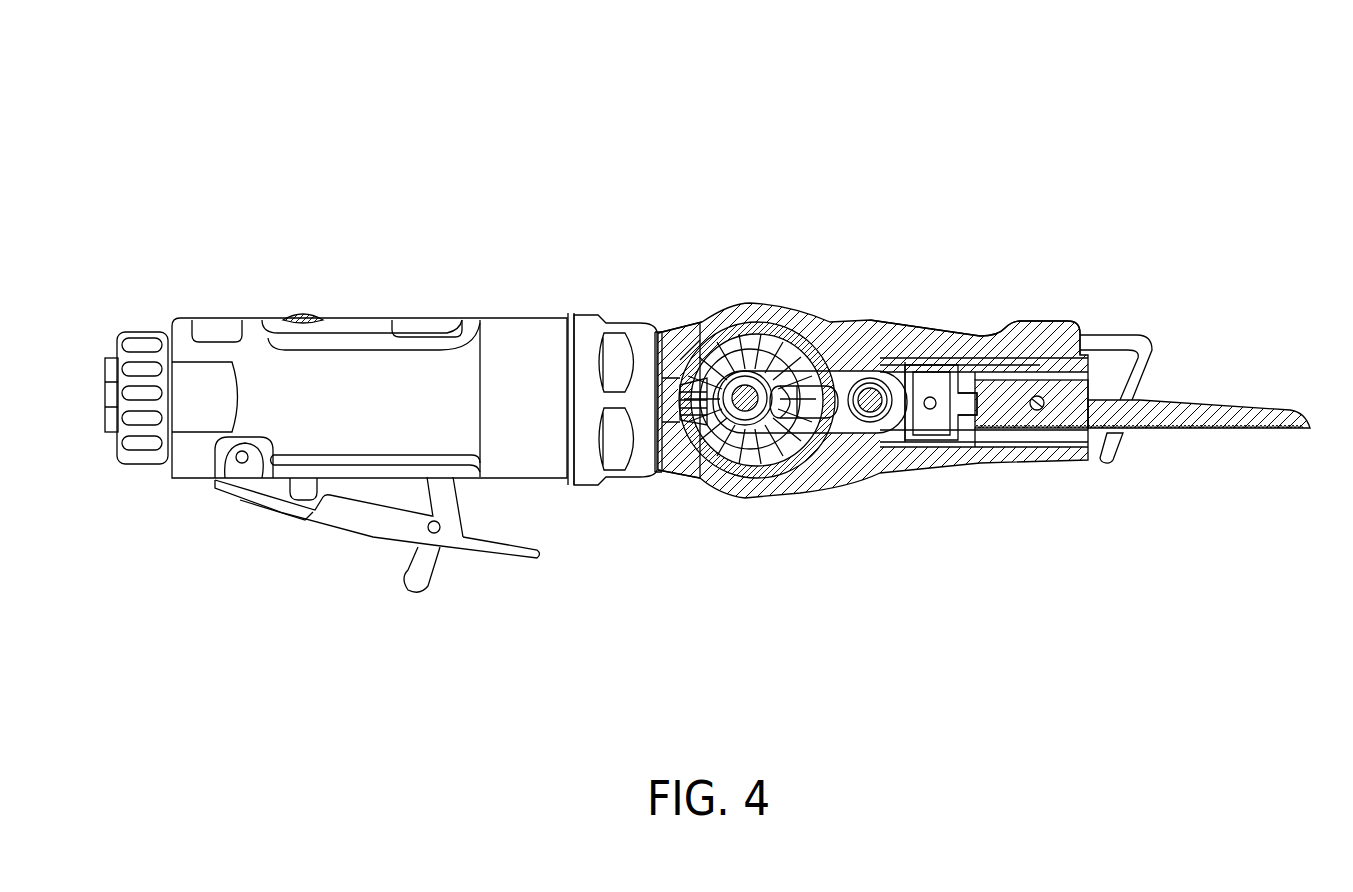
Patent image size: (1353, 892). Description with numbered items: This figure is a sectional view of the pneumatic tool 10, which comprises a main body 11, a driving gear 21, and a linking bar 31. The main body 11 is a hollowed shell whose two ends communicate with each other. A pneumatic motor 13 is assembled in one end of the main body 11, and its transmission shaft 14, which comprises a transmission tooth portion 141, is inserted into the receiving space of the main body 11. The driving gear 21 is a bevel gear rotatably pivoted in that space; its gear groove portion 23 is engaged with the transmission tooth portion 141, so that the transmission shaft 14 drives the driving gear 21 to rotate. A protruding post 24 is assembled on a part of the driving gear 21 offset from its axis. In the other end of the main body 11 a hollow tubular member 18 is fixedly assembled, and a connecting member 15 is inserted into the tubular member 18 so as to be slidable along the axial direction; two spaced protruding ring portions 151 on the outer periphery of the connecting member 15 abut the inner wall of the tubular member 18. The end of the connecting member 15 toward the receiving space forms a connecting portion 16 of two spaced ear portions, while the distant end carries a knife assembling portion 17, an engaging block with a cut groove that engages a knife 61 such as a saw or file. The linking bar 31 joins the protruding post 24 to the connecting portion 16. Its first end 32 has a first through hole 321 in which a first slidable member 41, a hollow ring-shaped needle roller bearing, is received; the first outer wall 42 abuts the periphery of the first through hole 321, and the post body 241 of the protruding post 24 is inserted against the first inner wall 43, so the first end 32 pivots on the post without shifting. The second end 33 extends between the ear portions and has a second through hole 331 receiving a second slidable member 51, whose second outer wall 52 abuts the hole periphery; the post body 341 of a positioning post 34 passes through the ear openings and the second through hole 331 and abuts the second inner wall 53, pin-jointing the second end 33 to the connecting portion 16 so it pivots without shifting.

The pneumatic tool 10 is at (508, 160).
The main body 11 is at (853, 328).
The pneumatic motor 13 is at (388, 372).
The transmission shaft 14 is at (672, 335).
The transmission tooth portion 141 is at (688, 335).
The connecting member 15 is at (992, 333).
The protruding ring portions 151 is at (936, 350).
The connecting portion 16 is at (912, 345).
The knife assembling portion 17 is at (960, 337).
The tubular member 18 is at (1033, 333).
The driving gear 21 is at (771, 345).
The gear groove portion 23 is at (719, 340).
The protruding post 24 is at (723, 470).
The post body 241 is at (681, 455).
The linking bar 31 is at (829, 340).
The first end 32 is at (762, 345).
The first through hole 321 is at (812, 350).
The second end 33 is at (878, 332).
The second through hole 331 is at (905, 355).
The positioning post 34 is at (838, 465).
The post body 341 is at (825, 480).
The first slidable member 41 is at (777, 480).
The first outer wall 42 is at (741, 455).
The first inner wall 43 is at (652, 470).
The second slidable member 51 is at (861, 440).
The second outer wall 52 is at (897, 453).
The second inner wall 53 is at (920, 465).
The knife 61 is at (1195, 410).